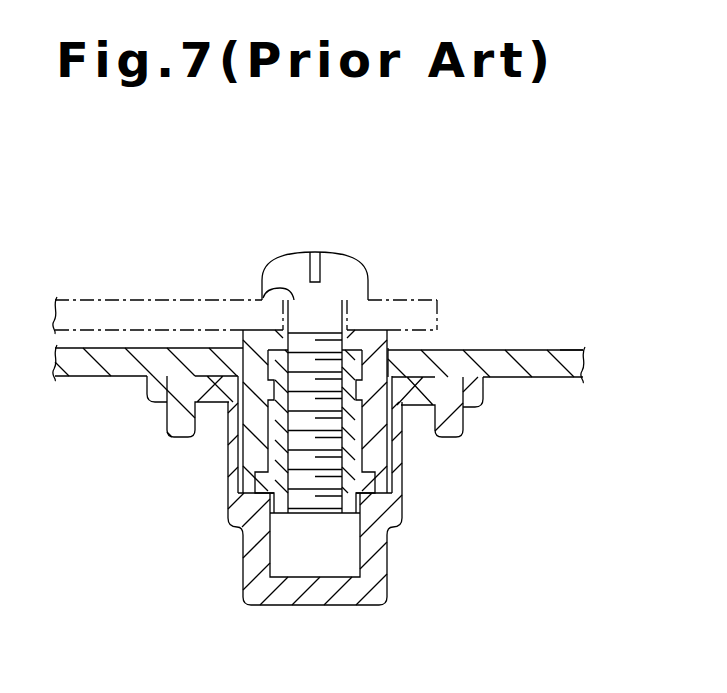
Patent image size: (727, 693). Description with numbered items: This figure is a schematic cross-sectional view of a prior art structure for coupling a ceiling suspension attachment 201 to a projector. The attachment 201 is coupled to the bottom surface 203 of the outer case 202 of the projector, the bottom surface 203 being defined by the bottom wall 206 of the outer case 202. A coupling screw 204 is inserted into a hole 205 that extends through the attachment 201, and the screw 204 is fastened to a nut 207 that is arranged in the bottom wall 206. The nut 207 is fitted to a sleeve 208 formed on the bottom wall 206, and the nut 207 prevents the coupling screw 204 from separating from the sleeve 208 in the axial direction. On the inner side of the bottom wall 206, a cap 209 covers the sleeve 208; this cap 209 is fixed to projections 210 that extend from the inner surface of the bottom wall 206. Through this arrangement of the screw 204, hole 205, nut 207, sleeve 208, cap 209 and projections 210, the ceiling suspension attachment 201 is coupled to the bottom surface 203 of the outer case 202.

The ceiling suspension attachment 201 is at (415, 300).
The outer case 202 is at (581, 350).
The bottom surface 203 is at (488, 350).
The coupling screw 204 is at (355, 255).
The hole 205 is at (290, 293).
The bottom wall 206 is at (546, 377).
The nut 207 is at (262, 442).
The sleeve 208 is at (276, 501).
The cap 209 is at (278, 606).
The projections 210 is at (446, 438).